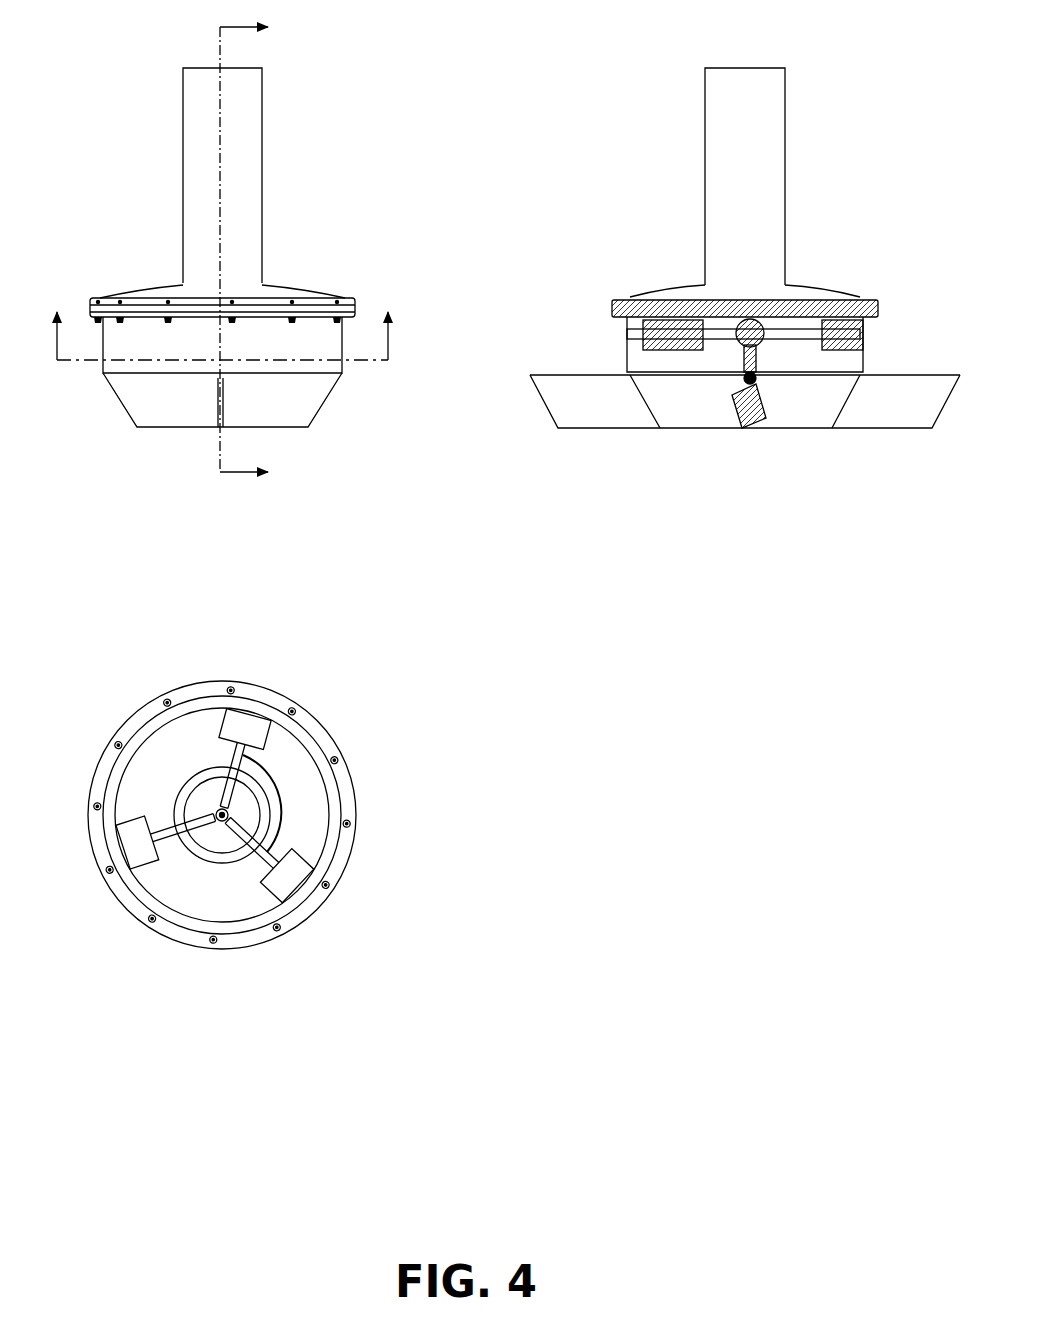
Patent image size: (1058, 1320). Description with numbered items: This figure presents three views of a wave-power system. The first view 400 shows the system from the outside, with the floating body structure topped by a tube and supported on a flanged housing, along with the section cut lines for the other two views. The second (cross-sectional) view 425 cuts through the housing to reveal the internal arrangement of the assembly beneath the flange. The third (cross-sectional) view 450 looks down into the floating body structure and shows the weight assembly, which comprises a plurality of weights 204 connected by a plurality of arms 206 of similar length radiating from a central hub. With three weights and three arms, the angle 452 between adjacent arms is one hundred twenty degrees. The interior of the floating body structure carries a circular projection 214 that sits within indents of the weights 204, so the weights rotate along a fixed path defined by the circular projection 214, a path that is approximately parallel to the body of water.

The first view 400 is at (380, 122).
The second (cross-sectional) view 425 is at (825, 120).
The third (cross-sectional) view 450 is at (346, 628).
The plurality of weights 204 is at (255, 718).
The angle 452 is at (281, 778).
The circular projection 214 is at (333, 795).
The plurality of arms 206 is at (265, 857).